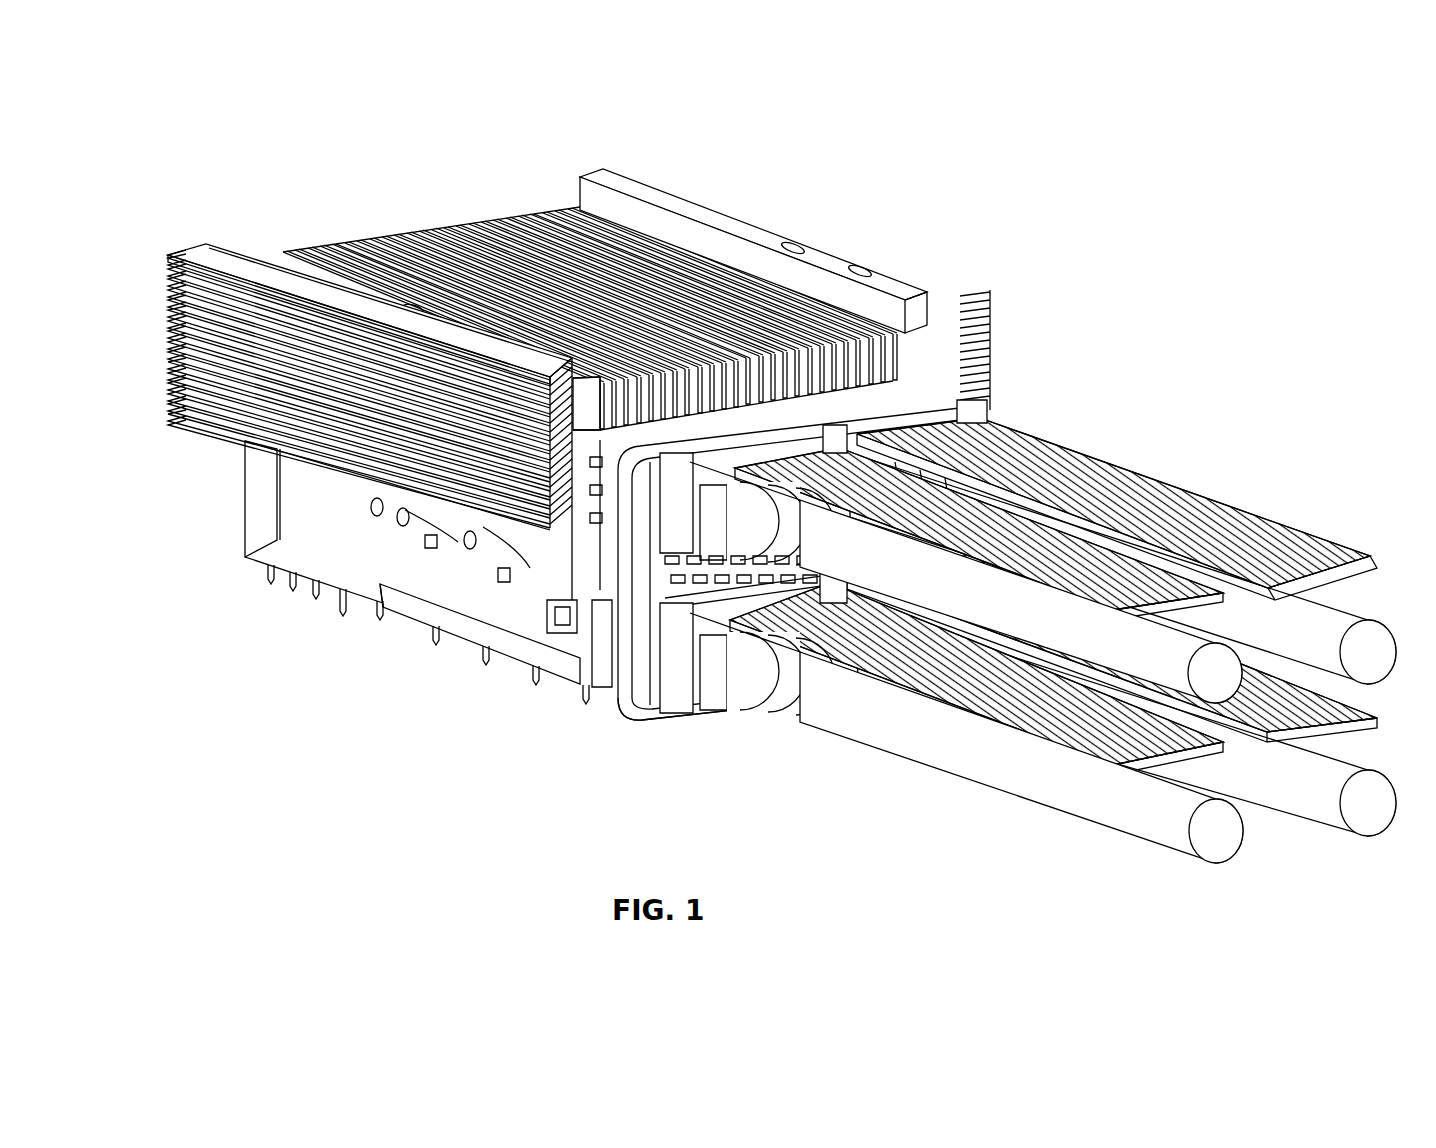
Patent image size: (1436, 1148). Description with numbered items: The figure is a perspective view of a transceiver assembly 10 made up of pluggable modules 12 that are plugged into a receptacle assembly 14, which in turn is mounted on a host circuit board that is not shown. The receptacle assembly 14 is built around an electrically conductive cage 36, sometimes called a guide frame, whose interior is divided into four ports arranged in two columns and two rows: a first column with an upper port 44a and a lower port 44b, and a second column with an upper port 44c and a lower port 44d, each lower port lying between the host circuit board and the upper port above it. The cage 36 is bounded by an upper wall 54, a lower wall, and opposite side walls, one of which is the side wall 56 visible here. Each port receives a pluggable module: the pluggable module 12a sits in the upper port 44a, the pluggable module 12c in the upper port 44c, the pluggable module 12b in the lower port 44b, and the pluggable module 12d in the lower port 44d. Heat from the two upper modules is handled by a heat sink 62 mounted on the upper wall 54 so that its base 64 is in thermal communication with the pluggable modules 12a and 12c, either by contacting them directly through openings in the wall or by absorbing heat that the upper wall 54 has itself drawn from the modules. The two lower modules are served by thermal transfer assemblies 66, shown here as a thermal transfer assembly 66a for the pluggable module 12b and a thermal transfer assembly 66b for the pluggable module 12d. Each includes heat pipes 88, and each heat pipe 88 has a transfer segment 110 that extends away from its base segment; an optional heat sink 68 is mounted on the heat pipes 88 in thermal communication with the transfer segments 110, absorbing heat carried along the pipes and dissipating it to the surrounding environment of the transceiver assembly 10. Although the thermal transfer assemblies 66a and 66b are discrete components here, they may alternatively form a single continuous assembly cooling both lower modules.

The transceiver assembly 10 is at (782, 483).
The transfer segment 110 is at (358, 430).
The heat sink 62 is at (496, 212).
The upper wall 54 is at (606, 426).
The receptacle assembly 14 is at (604, 406).
The heat sink 68 is at (792, 227).
The pluggable module 12a is at (757, 435).
The thermal transfer assembly 66b is at (913, 258).
The thermal transfer assembly 66 is at (990, 293).
The upper port 44c is at (990, 362).
The pluggable module 12c is at (992, 402).
The side wall 56 is at (295, 500).
The cage 36 is at (365, 524).
The thermal transfer assembly 66a is at (400, 538).
The heat pipe 88 is at (450, 525).
The base 64 is at (513, 520).
The upper port 44a is at (638, 514).
The pluggable module 12 is at (584, 692).
The lower port 44b is at (648, 728).
The pluggable module 12b is at (733, 700).
The lower port 44d is at (782, 705).
The pluggable module 12d is at (884, 608).